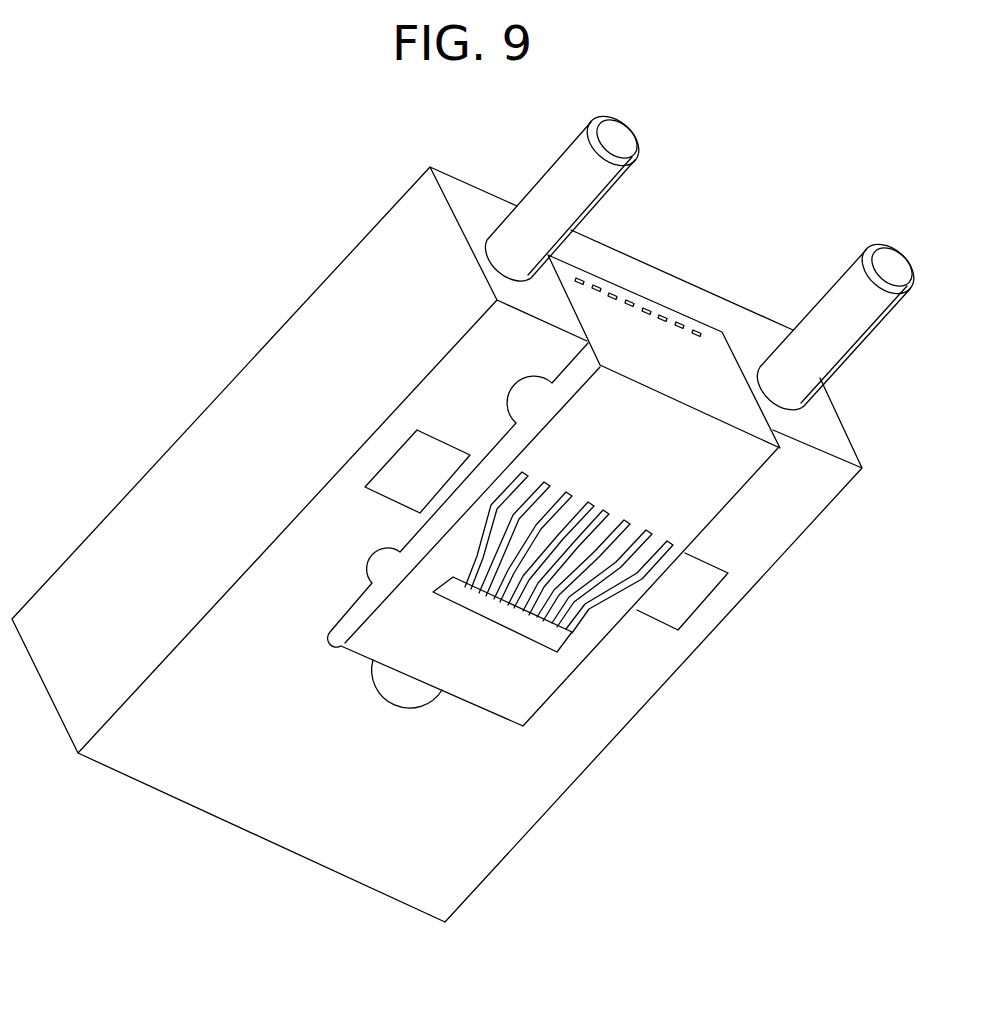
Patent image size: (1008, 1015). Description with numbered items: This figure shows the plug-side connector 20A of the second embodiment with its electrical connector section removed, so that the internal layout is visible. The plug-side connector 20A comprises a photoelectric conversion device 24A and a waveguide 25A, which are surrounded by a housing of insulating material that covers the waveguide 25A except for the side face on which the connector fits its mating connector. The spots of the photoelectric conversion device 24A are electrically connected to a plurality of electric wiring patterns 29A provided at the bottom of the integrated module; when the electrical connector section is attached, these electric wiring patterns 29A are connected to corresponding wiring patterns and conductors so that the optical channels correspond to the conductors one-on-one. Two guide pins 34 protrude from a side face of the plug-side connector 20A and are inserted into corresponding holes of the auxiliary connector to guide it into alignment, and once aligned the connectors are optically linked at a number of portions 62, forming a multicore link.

The plug-side connector 20A is at (184, 334).
The guide pin 34 is at (570, 163).
The portions 62 is at (650, 310).
The waveguide 25A is at (712, 470).
The photoelectric conversion device 24A is at (557, 642).
The electric wiring patterns 29A is at (647, 577).